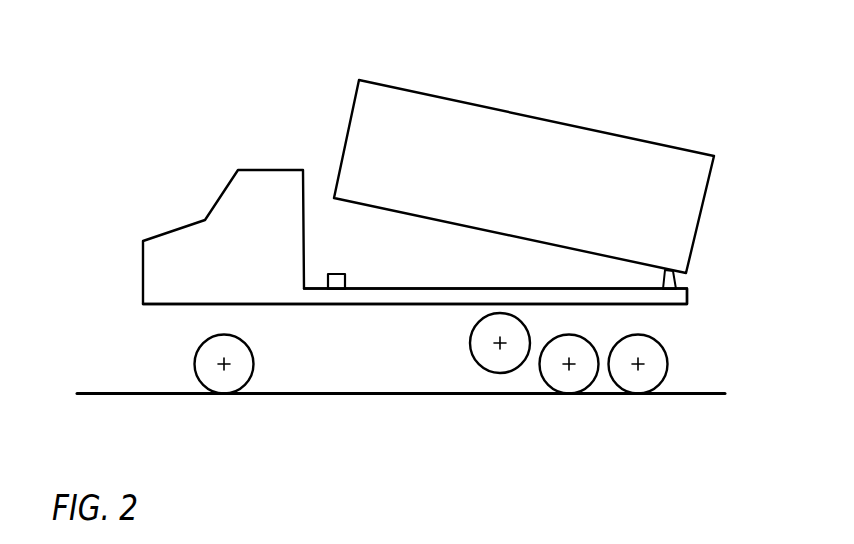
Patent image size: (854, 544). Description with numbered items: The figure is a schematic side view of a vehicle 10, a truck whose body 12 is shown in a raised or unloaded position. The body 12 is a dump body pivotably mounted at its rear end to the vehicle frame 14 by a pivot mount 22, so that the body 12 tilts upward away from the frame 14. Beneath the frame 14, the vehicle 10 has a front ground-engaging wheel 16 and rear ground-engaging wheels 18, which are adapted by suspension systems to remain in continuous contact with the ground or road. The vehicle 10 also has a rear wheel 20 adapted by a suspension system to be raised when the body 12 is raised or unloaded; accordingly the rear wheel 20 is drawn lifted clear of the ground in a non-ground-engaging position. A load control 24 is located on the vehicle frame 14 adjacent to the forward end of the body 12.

The vehicle 10 is at (127, 301).
The body 12 is at (688, 228).
The vehicle frame 14 is at (683, 302).
The front ground-engaging wheel 16 is at (229, 384).
The rear ground-engaging wheel 18 is at (575, 385).
The rear wheel 20 is at (499, 363).
The pivot mount 22 is at (673, 282).
The load control 24 is at (338, 282).